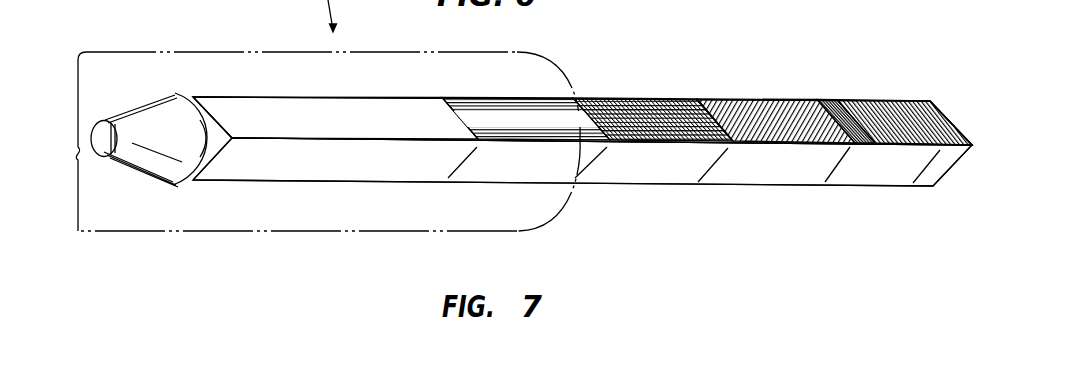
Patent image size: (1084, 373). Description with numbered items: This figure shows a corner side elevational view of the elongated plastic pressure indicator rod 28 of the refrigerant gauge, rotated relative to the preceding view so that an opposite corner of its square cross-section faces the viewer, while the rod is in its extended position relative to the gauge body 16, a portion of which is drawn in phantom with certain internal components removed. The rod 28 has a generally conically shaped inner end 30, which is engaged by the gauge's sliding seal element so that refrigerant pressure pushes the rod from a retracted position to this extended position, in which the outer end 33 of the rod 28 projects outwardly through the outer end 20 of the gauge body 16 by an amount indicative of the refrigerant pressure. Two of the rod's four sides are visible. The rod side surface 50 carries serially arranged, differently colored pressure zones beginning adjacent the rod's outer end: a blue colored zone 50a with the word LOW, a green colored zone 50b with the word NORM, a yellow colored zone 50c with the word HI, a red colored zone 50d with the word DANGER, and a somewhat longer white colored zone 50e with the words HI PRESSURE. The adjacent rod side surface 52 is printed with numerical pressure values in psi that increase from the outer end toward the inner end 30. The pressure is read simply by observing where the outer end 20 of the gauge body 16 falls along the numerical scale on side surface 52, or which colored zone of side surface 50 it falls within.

The gauge body 16 is at (165, 45).
The outer end of the gauge body 20 is at (560, 70).
The pressure indicator rod 28 is at (721, 86).
The inner end of the rod 30 is at (143, 163).
The outer end of the rod 33 is at (952, 110).
The rod side surface 50 is at (764, 85).
The blue colored zone 50a is at (877, 144).
The green colored zone 50b is at (763, 140).
The yellow colored zone 50c is at (622, 140).
The red colored zone 50d is at (528, 138).
The white colored zone 50e is at (337, 131).
The rod side surface 52 is at (718, 182).